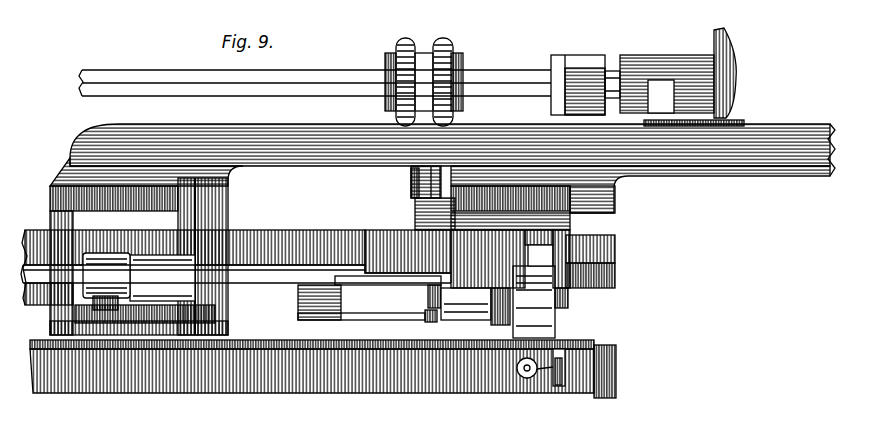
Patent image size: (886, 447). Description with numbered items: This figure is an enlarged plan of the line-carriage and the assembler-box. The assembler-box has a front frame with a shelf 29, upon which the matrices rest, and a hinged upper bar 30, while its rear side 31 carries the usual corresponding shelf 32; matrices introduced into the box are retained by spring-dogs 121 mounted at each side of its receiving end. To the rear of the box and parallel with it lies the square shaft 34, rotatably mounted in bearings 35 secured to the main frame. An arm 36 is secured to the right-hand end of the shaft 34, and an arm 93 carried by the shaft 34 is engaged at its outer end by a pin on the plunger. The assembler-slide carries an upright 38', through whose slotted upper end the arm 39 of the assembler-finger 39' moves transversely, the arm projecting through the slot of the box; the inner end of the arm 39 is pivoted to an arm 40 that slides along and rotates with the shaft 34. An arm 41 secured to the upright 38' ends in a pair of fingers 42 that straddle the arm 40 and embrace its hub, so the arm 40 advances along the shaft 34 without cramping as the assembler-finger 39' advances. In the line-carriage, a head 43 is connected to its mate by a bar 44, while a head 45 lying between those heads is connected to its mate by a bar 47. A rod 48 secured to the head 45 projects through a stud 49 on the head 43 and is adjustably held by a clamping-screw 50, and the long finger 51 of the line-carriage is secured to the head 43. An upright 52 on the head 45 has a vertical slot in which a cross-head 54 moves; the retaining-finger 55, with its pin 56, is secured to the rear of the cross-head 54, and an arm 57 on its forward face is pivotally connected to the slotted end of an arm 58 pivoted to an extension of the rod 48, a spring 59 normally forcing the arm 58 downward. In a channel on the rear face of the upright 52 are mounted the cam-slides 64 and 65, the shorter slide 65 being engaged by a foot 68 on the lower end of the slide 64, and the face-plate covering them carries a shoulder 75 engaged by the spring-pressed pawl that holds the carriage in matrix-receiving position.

The square shaft 34 is at (487, 67).
The fingers 42 is at (416, 42).
The arm 40 is at (417, 72).
The arm 36 is at (570, 55).
The bearings 35 is at (643, 53).
The arm 93 is at (726, 57).
The bar 47 is at (813, 122).
The bar 44 is at (197, 116).
The head 43 is at (73, 187).
The arm 41 is at (403, 160).
The arm 39 is at (373, 182).
The upright 38' is at (411, 206).
The head 45 is at (528, 183).
The rod 48 is at (270, 258).
The rear side 31 is at (330, 240).
The cam-slide 65 is at (588, 207).
The shoulder 75 is at (545, 242).
The cam-slide 64 is at (560, 232).
The foot 68 is at (548, 252).
The spring-dogs 121 is at (575, 270).
The shelf 32 is at (585, 281).
The retaining-finger 55 is at (560, 316).
The spring 59 is at (303, 295).
The assembler-finger 39' is at (412, 296).
The stud 49 is at (88, 272).
The clamping-screw 50 is at (102, 283).
The long finger 51 is at (150, 330).
The shelf 29 is at (240, 340).
The hinged upper bar 30 is at (272, 377).
The arm 58 is at (353, 317).
The arm 57 is at (456, 305).
The cross-head 54 is at (497, 312).
The upright 52 is at (513, 302).
The pin 56 is at (550, 367).